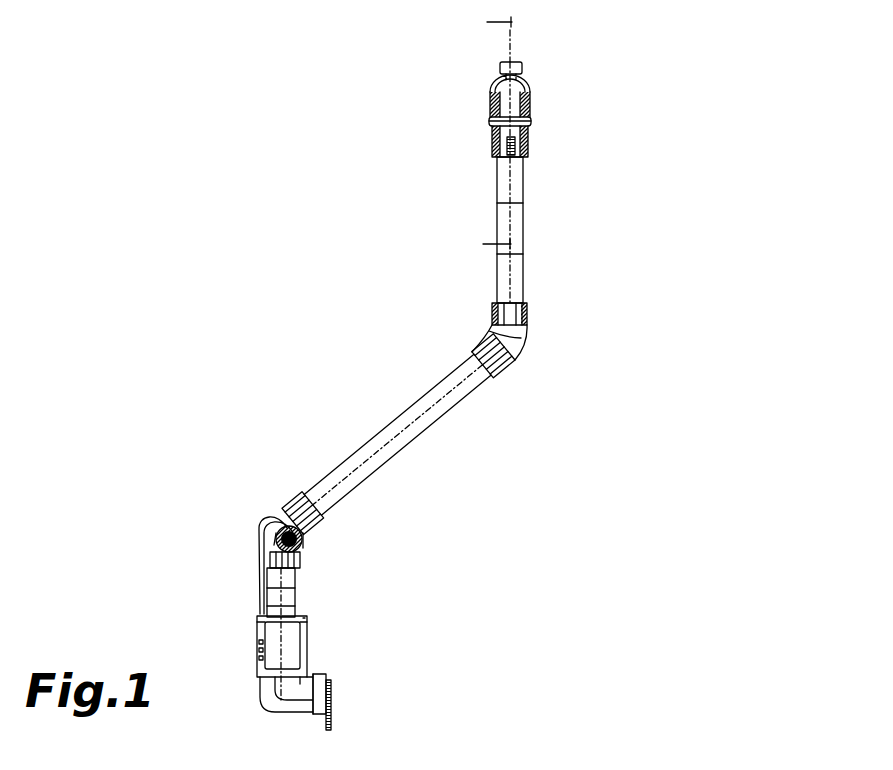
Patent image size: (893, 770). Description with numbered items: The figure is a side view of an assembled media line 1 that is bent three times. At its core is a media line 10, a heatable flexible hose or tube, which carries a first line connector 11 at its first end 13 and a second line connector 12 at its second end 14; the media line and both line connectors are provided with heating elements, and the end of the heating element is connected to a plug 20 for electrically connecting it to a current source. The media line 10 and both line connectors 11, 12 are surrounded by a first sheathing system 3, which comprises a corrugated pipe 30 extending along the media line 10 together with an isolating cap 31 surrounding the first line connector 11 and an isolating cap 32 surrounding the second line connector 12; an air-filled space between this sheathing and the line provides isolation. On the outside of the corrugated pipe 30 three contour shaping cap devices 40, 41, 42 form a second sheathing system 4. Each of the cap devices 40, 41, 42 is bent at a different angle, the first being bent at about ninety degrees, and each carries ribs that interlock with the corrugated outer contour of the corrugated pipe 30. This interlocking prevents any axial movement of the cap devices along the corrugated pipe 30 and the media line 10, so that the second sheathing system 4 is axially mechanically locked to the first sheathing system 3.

The assembled media line 1 is at (287, 143).
The first sheathing system 3 is at (398, 455).
The second sheathing system 4 is at (490, 107).
The media line 10 is at (519, 220).
The first line connector 11 is at (534, 108).
The second line connector 12 is at (272, 645).
The first end of the media line 13 is at (490, 135).
The second end of the media line 14 is at (248, 608).
The plug 20 is at (302, 550).
The corrugated pipe 30 is at (370, 455).
The isolating cap 31 is at (529, 72).
The isolating cap 32 is at (263, 682).
The contour shaping cap device 40 is at (522, 152).
The contour shaping cap device 41 is at (522, 352).
The contour shaping cap device 42 is at (300, 507).